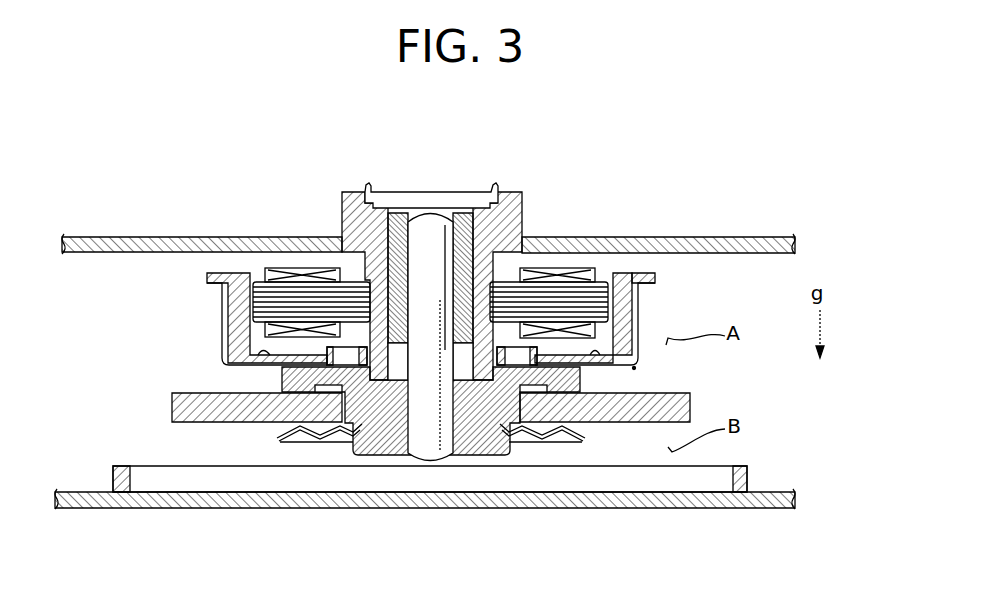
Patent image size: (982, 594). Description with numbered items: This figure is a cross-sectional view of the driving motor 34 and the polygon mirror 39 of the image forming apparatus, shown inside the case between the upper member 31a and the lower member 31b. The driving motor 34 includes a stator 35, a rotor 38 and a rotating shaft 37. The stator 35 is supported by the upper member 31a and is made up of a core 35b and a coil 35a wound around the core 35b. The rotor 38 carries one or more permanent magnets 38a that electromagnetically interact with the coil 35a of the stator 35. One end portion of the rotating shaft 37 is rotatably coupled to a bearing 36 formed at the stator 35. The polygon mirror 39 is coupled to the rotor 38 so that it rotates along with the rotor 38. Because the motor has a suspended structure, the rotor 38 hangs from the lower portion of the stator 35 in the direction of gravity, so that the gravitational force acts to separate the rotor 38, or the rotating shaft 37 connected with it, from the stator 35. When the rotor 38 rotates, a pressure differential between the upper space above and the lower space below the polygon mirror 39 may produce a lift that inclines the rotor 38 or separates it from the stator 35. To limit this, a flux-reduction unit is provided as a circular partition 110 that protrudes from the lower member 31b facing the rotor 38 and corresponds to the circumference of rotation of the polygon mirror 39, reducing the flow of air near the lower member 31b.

The upper member 31a is at (150, 243).
The lower member 31b is at (180, 497).
The driving motor 34 is at (514, 176).
The stator 35 is at (464, 256).
The coil 35a is at (603, 268).
The core 35b is at (595, 287).
The bearing 36 is at (462, 213).
The rotating shaft 37 is at (424, 221).
The rotor 38 is at (636, 368).
The permanent magnet 38a is at (637, 270).
The polygon mirror 39 is at (690, 410).
The circular partition 110 is at (747, 478).